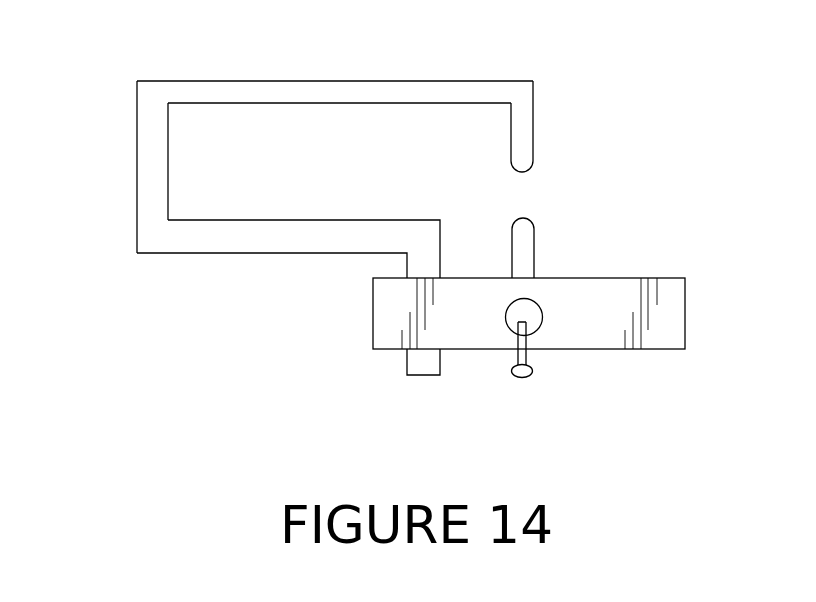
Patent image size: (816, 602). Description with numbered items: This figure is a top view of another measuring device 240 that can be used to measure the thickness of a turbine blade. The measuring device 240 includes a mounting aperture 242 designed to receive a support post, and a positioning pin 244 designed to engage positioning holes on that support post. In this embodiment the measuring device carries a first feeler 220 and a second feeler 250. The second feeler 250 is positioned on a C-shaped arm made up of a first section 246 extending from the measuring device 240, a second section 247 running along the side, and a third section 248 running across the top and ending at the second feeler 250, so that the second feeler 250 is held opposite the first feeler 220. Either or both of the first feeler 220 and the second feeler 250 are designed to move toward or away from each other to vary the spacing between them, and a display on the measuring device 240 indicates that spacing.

The third section 248 is at (315, 92).
The second section 247 is at (147, 157).
The first section 246 is at (240, 235).
The second feeler 250 is at (535, 166).
The first feeler 220 is at (525, 233).
The measuring device 240 is at (607, 297).
The mounting aperture 242 is at (507, 327).
The positioning pin 244 is at (528, 380).